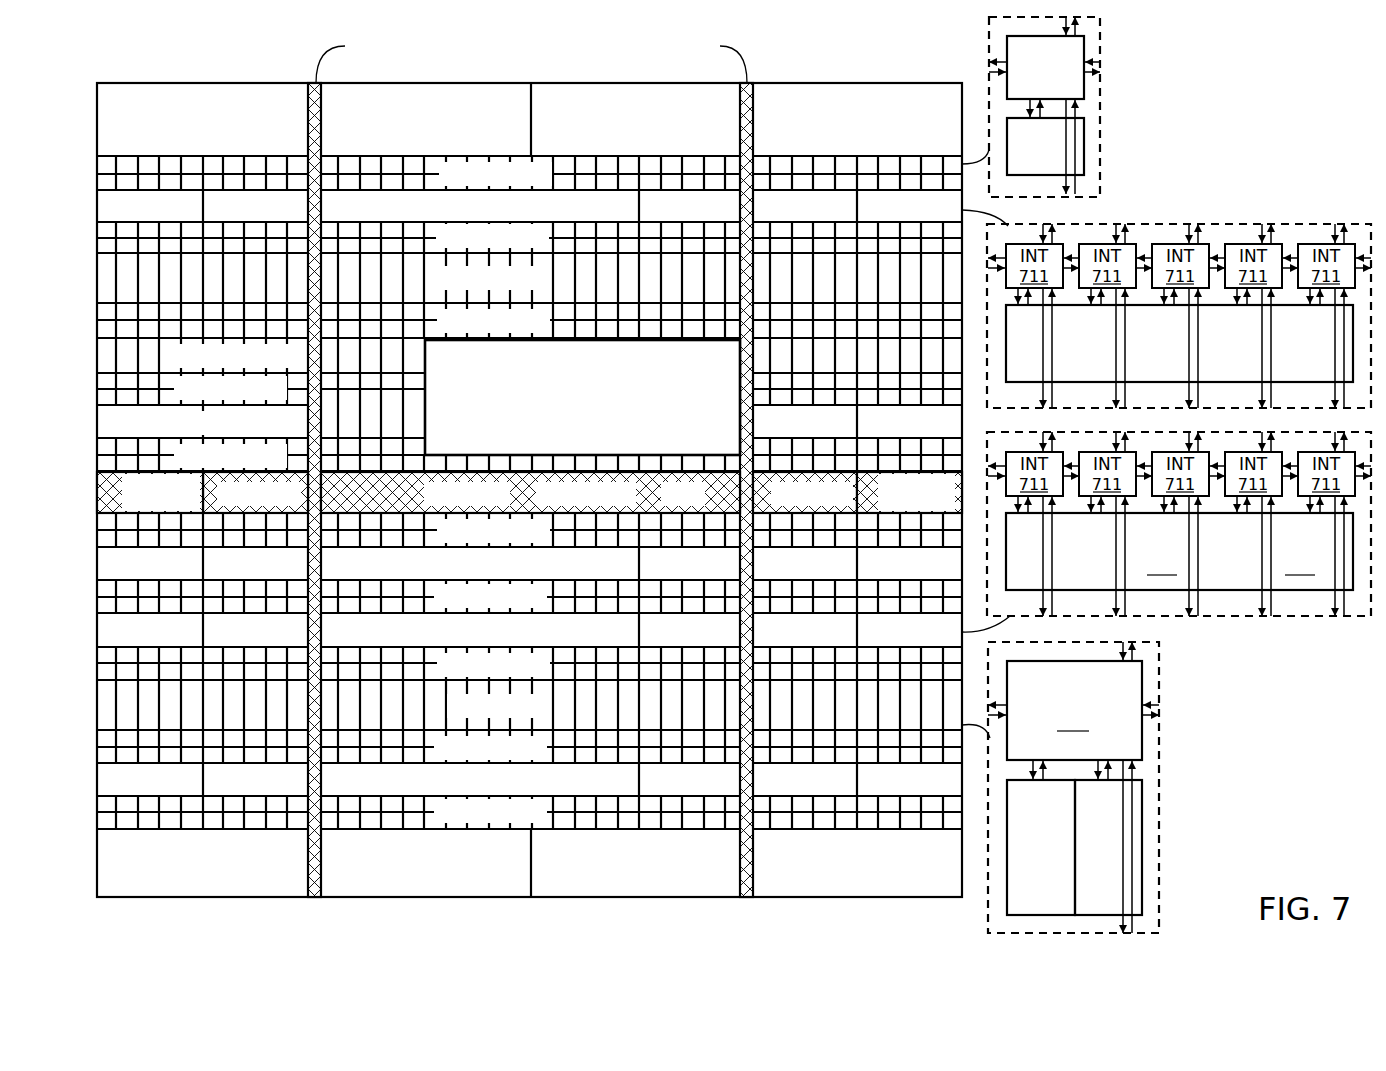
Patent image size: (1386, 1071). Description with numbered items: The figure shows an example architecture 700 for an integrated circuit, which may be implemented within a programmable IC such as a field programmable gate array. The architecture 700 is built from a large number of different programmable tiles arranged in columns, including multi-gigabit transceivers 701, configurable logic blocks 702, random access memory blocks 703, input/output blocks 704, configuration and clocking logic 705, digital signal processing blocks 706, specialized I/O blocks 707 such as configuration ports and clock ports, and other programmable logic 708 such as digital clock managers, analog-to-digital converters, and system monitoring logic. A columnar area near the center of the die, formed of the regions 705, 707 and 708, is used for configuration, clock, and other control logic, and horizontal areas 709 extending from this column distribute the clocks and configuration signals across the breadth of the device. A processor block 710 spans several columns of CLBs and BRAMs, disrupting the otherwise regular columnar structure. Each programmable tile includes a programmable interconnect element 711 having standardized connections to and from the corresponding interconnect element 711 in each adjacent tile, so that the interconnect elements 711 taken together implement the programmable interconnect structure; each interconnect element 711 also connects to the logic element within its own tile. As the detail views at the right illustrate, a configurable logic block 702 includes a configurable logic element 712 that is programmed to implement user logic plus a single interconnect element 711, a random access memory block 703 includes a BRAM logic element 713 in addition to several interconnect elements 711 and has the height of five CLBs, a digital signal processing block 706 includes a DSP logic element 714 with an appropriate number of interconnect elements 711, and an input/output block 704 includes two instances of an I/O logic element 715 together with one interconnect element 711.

The architecture 700 is at (1286, 119).
The multi-gigabit transceivers 701 is at (478, 130).
The configurable logic blocks 702 is at (546, 184).
The random access memory blocks 703 is at (555, 216).
The input/output blocks 704 is at (529, 288).
The configuration and clocking logic 705 is at (699, 503).
The digital signal processing blocks 706 is at (539, 640).
The specialized I/O blocks 707 is at (295, 503).
The other programmable logic 708 is at (174, 511).
The horizontal areas 709 is at (704, 55).
The processor block 710 is at (641, 405).
The programmable interconnect element 711 is at (1029, 85).
The configurable logic element 712 is at (1029, 169).
The BRAM logic element 713 is at (1147, 367).
The DSP logic element 714 is at (1285, 367).
The I/O logic element 715 is at (1023, 876).